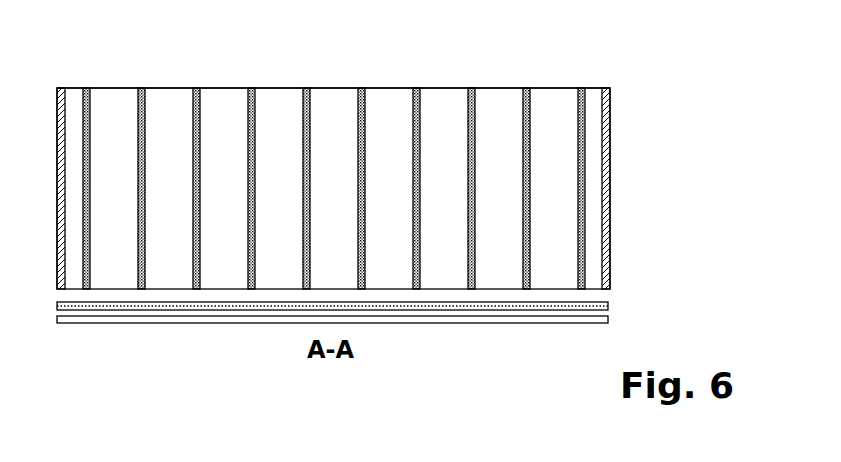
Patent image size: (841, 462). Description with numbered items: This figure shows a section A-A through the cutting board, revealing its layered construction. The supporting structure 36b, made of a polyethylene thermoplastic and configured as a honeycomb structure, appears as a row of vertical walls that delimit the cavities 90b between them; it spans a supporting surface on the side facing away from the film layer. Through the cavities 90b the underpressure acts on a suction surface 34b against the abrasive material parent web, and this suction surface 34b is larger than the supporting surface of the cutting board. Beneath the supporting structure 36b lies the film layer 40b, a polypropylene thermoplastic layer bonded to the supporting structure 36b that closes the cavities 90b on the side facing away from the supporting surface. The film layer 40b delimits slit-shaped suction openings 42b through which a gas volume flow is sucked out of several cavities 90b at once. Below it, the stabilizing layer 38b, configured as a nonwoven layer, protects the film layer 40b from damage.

The suction surface 34b is at (455, 88).
The suction openings 42b is at (460, 70).
The supporting structure 36b is at (546, 88).
The cavities 90b is at (498, 232).
The film layer 40b is at (612, 306).
The stabilizing layer 38b is at (612, 320).